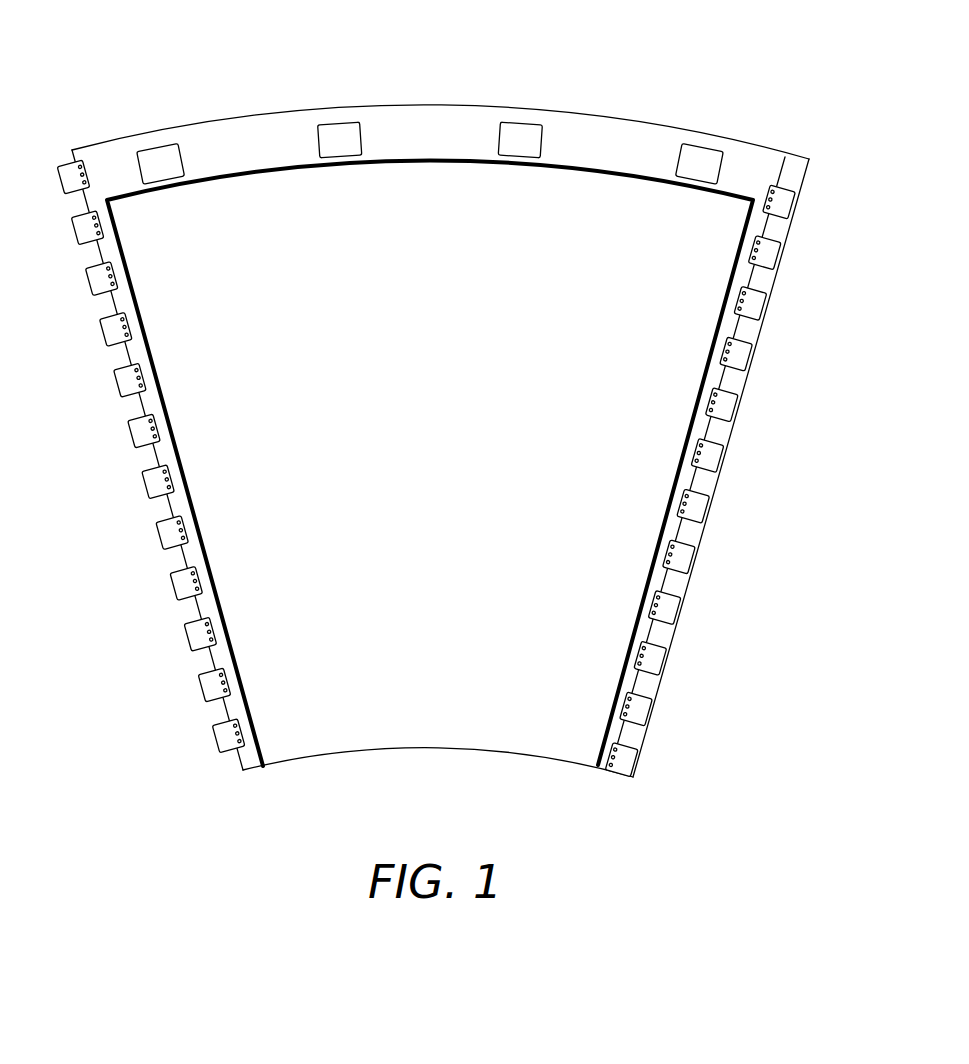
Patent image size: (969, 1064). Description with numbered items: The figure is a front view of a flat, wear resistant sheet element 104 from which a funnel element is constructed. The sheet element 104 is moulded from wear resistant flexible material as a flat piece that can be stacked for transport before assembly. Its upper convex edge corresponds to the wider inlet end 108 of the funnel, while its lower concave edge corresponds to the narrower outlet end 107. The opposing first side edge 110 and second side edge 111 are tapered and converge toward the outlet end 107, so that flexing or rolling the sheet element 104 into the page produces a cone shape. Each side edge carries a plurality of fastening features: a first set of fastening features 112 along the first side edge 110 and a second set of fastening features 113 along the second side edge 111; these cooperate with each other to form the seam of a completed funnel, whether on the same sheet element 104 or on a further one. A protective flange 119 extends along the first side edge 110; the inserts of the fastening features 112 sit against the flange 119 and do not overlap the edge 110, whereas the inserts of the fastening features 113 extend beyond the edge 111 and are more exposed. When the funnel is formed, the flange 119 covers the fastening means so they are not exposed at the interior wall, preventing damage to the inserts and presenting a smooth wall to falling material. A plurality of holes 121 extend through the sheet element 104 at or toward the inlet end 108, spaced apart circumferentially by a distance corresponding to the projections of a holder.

The sheet element 104 is at (457, 406).
The outlet end 107 is at (437, 758).
The inlet end 108 is at (436, 89).
The first side edge 110 is at (705, 537).
The second side edge 111 is at (182, 553).
The fastening features 112 is at (755, 310).
The fastening features 113 is at (157, 473).
The protective flange 119 is at (797, 160).
The holes 121 is at (518, 133).